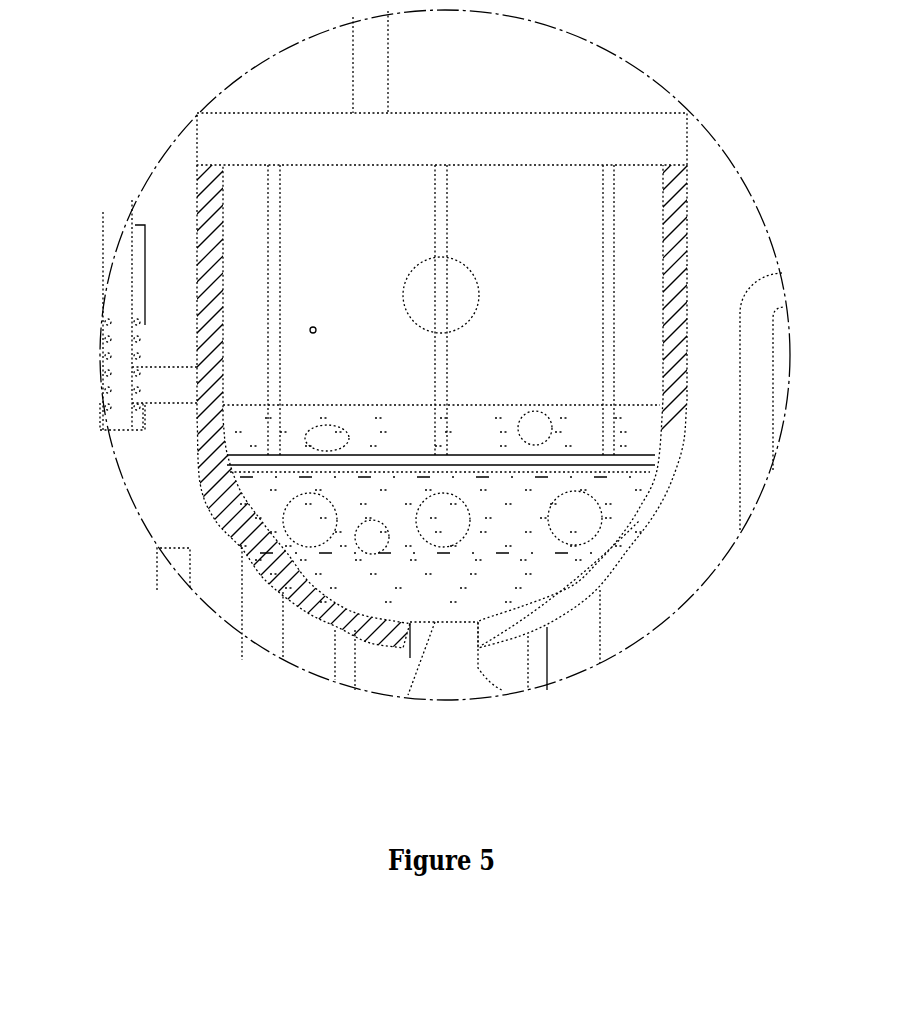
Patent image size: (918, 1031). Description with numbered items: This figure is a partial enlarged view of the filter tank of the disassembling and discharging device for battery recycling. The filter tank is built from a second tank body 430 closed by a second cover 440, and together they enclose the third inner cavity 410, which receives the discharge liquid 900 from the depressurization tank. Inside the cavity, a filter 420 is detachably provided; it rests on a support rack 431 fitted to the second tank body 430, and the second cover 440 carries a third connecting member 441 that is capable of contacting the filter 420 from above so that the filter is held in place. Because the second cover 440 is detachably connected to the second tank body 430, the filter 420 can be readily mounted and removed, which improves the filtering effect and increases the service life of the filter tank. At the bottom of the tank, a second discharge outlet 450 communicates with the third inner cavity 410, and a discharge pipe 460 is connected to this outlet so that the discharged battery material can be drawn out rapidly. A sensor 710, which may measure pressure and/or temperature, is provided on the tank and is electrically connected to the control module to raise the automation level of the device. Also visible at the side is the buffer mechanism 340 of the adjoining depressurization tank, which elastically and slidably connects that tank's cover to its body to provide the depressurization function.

The buffer mechanism 340 is at (121, 284).
The third inner cavity 410 is at (695, 290).
The filter 420 is at (630, 460).
The second tank body 430 is at (640, 385).
The support rack 431 is at (592, 472).
The second cover 440 is at (632, 137).
The third connecting member 441 is at (610, 212).
The second discharge outlet 450 is at (413, 670).
The discharge pipe 460 is at (465, 672).
The sensor 710 is at (311, 328).
The discharge liquid 900 is at (493, 590).